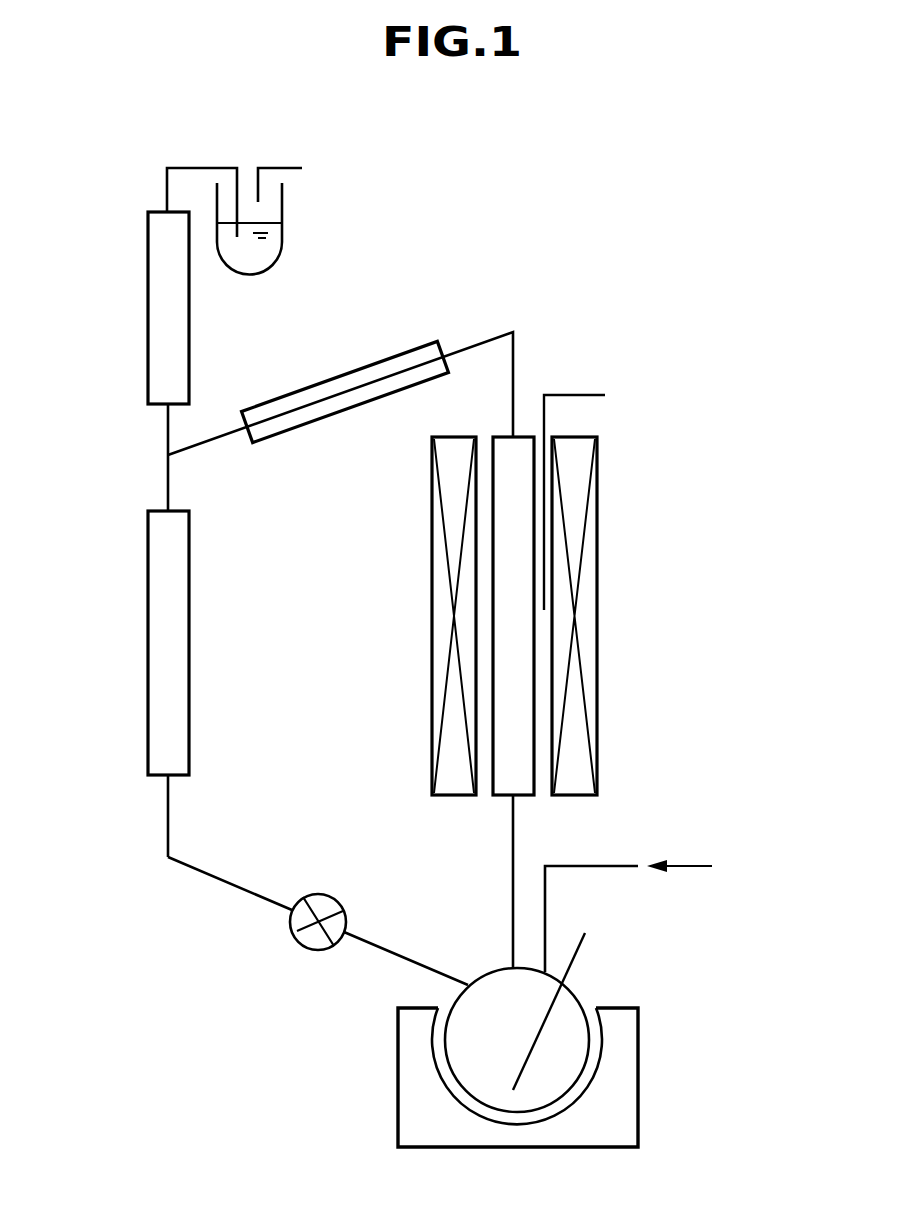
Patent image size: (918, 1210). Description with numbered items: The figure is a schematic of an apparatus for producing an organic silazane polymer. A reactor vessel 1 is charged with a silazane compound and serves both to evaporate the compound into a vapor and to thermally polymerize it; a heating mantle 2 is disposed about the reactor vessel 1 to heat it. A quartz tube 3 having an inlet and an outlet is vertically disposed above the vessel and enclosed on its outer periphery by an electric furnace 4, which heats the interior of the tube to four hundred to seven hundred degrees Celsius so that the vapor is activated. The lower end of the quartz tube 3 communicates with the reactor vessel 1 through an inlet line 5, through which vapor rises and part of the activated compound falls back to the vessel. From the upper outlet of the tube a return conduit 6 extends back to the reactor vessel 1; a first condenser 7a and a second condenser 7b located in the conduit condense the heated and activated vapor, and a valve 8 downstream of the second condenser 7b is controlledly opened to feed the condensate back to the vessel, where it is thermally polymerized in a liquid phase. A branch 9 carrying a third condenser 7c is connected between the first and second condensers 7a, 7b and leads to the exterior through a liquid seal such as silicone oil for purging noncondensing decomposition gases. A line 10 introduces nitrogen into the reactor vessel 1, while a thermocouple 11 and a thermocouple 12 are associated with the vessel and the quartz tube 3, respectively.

The reactor vessel 1 is at (517, 1040).
The heating mantle 2 is at (425, 1122).
The quartz tube 3 is at (522, 665).
The electric furnace 4 is at (494, 616).
The inlet line 5 is at (513, 870).
The return conduit 6 is at (246, 885).
The first condenser 7a is at (340, 393).
The second condenser 7b is at (143, 684).
The third condenser 7c is at (142, 361).
The valve 8 is at (318, 905).
The branch 9 is at (163, 187).
The line 10 is at (607, 866).
The thermocouple 11 is at (585, 933).
The thermocouple 12 is at (593, 496).